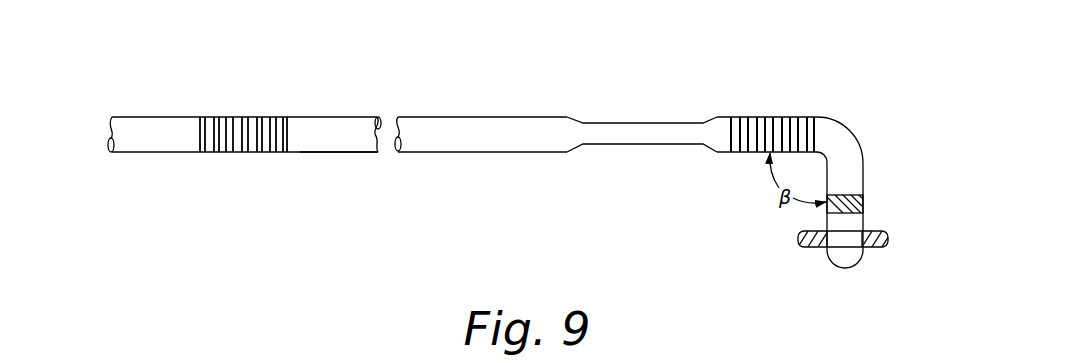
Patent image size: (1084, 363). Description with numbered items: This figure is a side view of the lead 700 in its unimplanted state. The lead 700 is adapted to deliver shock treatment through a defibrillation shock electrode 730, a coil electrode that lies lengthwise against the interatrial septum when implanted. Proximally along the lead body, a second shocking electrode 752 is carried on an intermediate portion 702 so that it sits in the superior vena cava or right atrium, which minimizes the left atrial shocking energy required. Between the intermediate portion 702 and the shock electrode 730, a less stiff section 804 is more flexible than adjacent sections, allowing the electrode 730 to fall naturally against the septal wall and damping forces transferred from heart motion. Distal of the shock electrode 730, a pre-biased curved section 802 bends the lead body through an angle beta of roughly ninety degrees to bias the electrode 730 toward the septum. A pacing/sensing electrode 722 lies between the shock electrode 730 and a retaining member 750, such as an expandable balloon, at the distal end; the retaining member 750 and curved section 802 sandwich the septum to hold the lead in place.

The lead 700 is at (315, 117).
The intermediate portion 702 is at (335, 152).
The second shocking electrode 752 is at (238, 152).
The less stiff section 804 is at (643, 117).
The defibrillation shock electrode 730 is at (776, 117).
The pre-biased curved section 802 is at (848, 132).
The pacing/sensing electrode 722 is at (864, 200).
The retaining member 750 is at (797, 233).